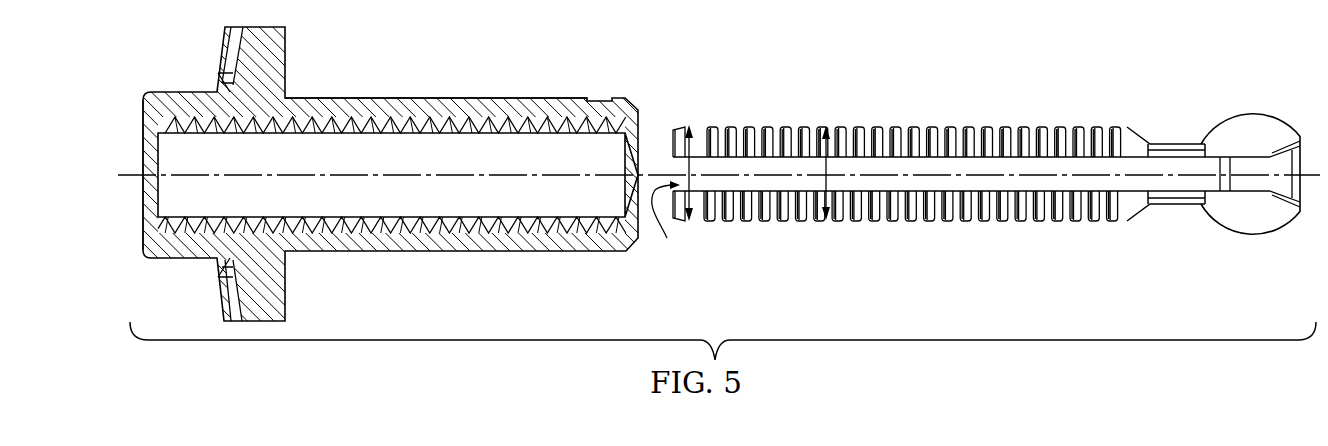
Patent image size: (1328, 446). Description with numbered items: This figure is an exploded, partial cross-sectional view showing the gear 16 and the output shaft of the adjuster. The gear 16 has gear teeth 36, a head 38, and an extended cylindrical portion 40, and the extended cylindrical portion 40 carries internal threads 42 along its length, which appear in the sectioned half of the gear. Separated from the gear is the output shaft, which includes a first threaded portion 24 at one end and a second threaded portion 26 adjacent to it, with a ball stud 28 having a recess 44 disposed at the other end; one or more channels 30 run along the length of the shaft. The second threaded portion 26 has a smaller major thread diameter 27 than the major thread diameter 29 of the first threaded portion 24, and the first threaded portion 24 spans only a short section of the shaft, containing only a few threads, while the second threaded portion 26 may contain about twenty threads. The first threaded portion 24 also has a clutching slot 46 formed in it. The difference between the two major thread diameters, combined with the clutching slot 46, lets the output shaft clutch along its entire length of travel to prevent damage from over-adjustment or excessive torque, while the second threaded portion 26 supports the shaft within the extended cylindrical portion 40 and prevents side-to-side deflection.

The gear 16 is at (434, 86).
The first threaded portion 24 is at (690, 125).
The second threaded portion 26 is at (873, 128).
The major thread diameter 27 is at (823, 168).
The ball stud 28 is at (1257, 130).
The major thread diameter 29 is at (694, 170).
The channels 30 is at (944, 180).
The gear teeth 36 is at (222, 86).
The head 38 is at (143, 138).
The extended cylindrical portion 40 is at (357, 98).
The internal threads 42 is at (470, 223).
The recess 44 is at (1297, 186).
The clutching slot 46 is at (666, 222).